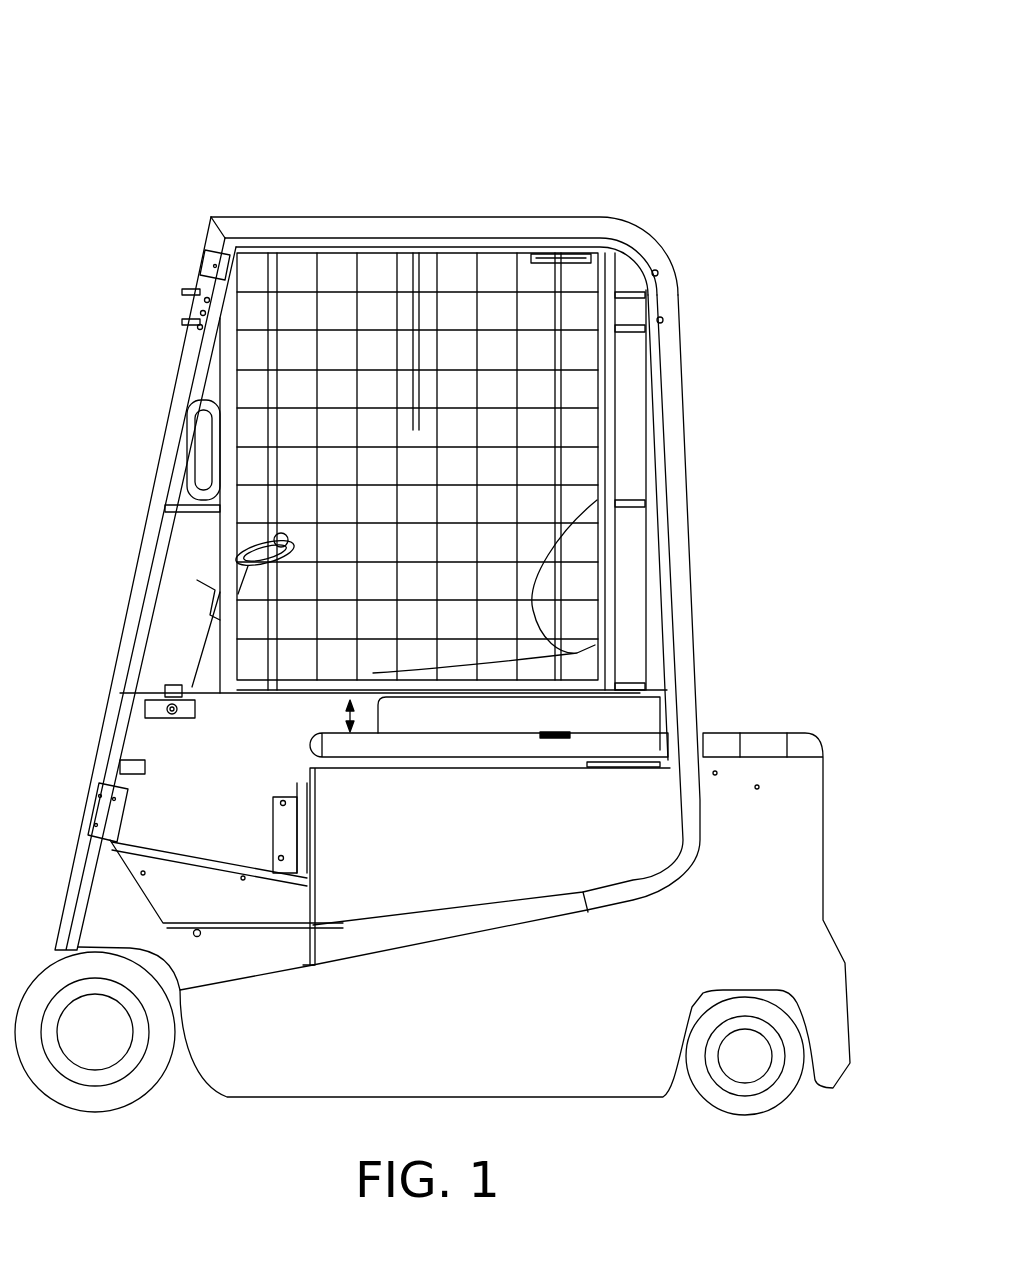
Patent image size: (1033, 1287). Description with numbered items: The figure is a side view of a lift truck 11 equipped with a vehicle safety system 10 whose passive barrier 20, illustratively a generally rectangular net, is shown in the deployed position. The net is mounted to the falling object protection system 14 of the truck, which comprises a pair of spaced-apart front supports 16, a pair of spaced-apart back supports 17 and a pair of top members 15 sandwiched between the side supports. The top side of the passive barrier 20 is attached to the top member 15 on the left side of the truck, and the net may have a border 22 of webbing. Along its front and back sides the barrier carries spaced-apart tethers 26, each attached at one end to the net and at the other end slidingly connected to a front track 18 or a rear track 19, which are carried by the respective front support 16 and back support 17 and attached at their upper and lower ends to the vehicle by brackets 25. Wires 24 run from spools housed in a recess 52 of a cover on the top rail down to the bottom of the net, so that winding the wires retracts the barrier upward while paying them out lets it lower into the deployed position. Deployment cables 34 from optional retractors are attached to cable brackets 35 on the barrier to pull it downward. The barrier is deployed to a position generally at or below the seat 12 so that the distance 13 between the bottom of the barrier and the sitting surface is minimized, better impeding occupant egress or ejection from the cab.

The vehicle safety system 10 is at (162, 113).
The lift truck 11 is at (832, 698).
The seat 12 is at (445, 718).
The distance 13 is at (343, 716).
The falling object protection system 14 is at (506, 182).
The top member 15 is at (394, 227).
The front support 16 is at (163, 487).
The back support 17 is at (677, 423).
The front track 18 is at (217, 358).
The rear track 19 is at (663, 393).
The passive barrier 20 is at (535, 412).
The border 22 is at (270, 690).
The wire 24 is at (414, 432).
The bracket 25 is at (212, 267).
The tether 26 is at (637, 320).
The deployment cable 34 is at (145, 712).
The cable bracket 35 is at (133, 767).
The recess 52 is at (545, 263).